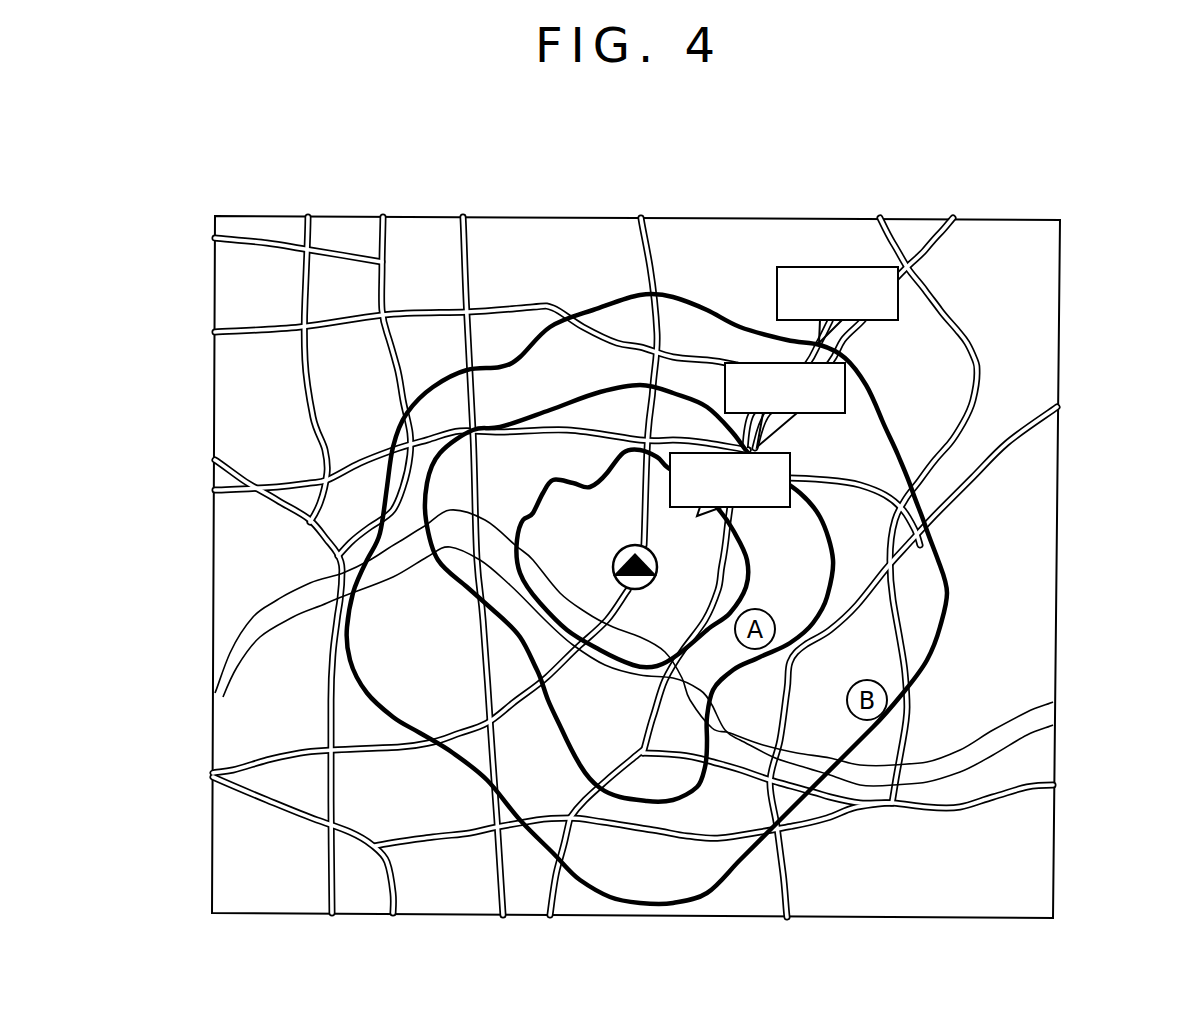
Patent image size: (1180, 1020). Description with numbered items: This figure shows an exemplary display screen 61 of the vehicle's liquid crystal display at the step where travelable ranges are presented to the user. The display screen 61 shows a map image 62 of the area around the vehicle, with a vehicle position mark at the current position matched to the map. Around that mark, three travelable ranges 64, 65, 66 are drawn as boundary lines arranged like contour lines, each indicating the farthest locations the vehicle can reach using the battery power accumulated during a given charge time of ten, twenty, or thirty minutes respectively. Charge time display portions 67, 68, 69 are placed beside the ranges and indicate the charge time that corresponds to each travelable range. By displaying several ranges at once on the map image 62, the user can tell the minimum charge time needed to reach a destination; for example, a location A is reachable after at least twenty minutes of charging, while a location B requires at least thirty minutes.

The display screen 61 is at (986, 218).
The map image 62 is at (1035, 325).
The travelable range 64 is at (531, 511).
The travelable range 65 is at (589, 394).
The travelable range 66 is at (604, 294).
The charge time display portion 67 is at (784, 509).
The charge time display portion 68 is at (831, 414).
The charge time display portion 69 is at (885, 322).